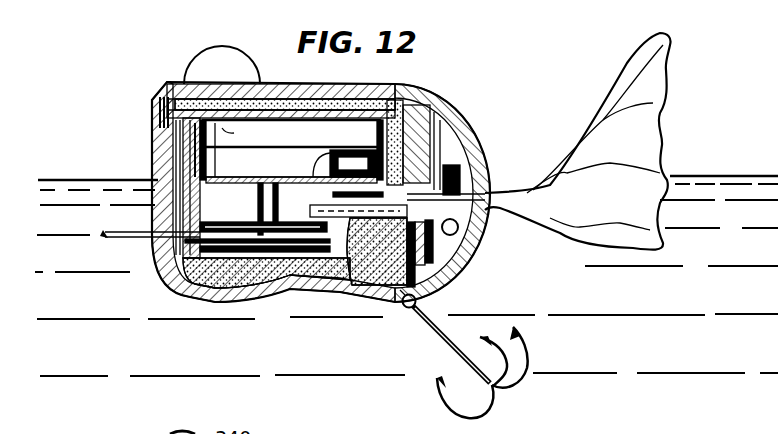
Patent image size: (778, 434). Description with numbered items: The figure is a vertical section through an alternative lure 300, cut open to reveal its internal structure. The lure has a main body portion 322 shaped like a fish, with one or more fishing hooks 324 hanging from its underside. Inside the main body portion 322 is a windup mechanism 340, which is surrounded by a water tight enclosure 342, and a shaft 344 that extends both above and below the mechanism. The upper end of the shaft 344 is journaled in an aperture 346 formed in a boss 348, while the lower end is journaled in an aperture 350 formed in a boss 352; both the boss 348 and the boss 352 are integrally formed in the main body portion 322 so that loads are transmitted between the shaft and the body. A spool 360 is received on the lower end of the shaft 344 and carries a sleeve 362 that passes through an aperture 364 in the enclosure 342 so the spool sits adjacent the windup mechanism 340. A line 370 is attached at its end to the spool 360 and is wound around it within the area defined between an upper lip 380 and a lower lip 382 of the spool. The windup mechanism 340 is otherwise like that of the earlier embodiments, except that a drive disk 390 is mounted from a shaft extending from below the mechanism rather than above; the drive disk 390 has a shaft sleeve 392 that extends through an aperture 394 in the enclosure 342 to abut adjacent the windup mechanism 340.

The lure 300 is at (476, 116).
The main body portion 322 is at (476, 98).
The fishing hooks 324 is at (433, 334).
The windup mechanism 340 is at (205, 130).
The water tight enclosure 342 is at (395, 86).
The shaft 344 is at (287, 86).
The aperture 346 is at (272, 110).
The boss 348 is at (195, 80).
The aperture 350 is at (240, 288).
The boss 352 is at (237, 294).
The spool 360 is at (182, 210).
The sleeve 362 is at (258, 208).
The aperture 364 is at (200, 167).
The line 370 is at (107, 236).
The upper lip 380 is at (166, 250).
The lower lip 382 is at (172, 275).
The drive disk 390 is at (358, 250).
The shaft sleeve 392 is at (372, 146).
The aperture 394 is at (330, 160).